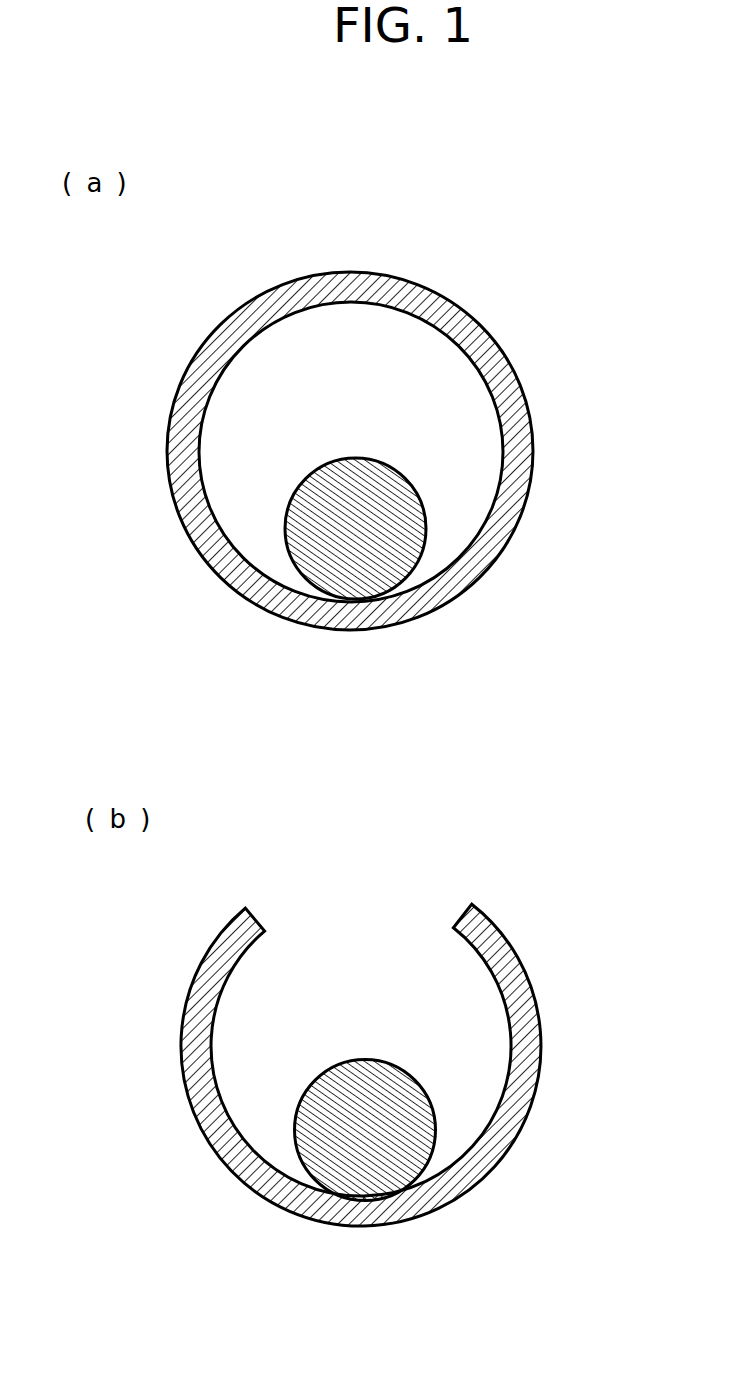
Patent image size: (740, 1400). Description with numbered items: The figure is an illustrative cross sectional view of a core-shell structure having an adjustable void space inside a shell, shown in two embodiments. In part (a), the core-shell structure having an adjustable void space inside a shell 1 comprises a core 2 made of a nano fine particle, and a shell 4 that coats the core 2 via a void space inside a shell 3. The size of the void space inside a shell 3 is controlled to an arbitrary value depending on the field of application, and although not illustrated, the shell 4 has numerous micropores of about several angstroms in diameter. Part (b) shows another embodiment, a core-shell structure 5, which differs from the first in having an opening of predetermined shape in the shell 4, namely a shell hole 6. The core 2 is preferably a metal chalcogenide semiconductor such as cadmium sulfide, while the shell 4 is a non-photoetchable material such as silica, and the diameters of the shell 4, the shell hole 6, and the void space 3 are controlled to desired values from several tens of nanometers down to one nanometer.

The core-shell structure having an adjustable void space inside a shell 1 is at (355, 716).
The core 2 is at (402, 533).
The void space inside a shell 3 is at (370, 373).
The shell 4 is at (518, 417).
The core-shell structure 5 is at (372, 1307).
The shell hole 6 is at (357, 907).